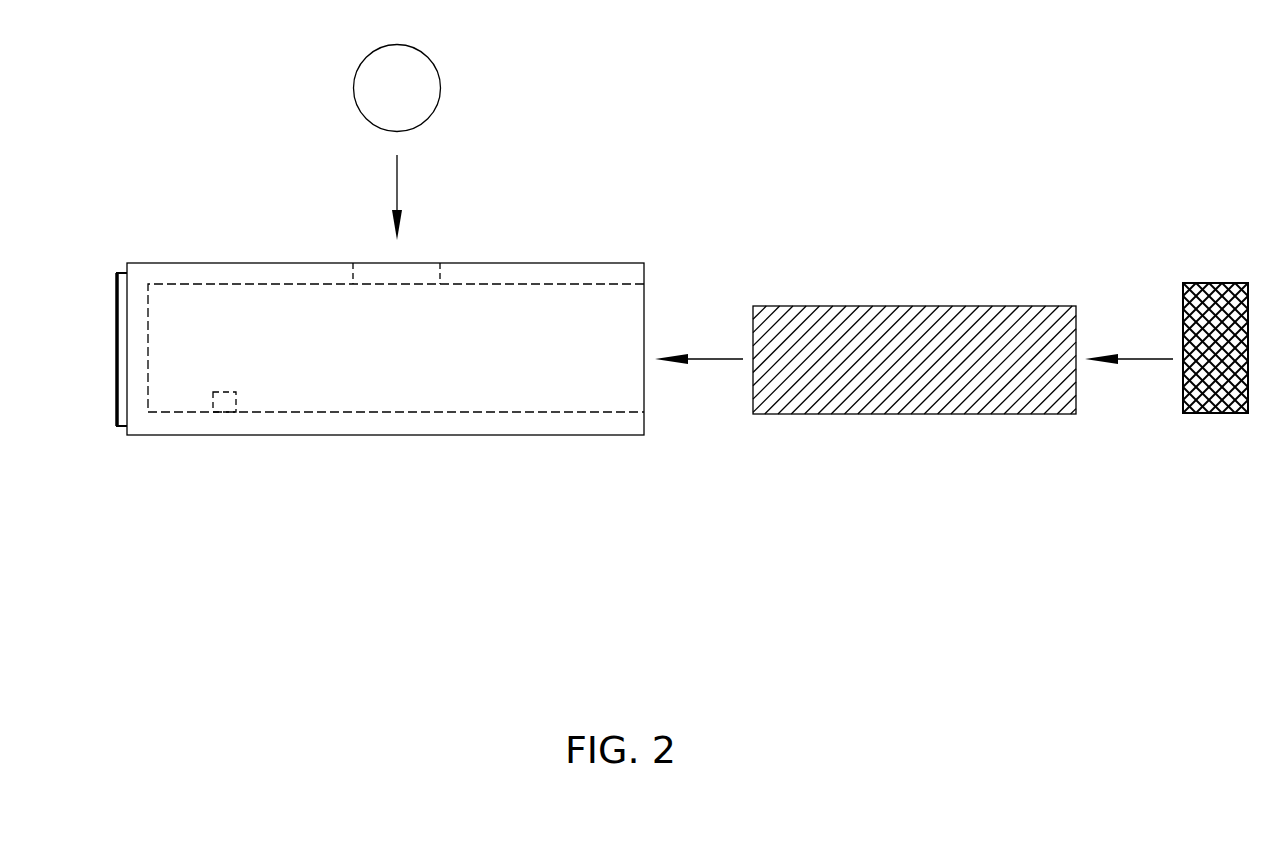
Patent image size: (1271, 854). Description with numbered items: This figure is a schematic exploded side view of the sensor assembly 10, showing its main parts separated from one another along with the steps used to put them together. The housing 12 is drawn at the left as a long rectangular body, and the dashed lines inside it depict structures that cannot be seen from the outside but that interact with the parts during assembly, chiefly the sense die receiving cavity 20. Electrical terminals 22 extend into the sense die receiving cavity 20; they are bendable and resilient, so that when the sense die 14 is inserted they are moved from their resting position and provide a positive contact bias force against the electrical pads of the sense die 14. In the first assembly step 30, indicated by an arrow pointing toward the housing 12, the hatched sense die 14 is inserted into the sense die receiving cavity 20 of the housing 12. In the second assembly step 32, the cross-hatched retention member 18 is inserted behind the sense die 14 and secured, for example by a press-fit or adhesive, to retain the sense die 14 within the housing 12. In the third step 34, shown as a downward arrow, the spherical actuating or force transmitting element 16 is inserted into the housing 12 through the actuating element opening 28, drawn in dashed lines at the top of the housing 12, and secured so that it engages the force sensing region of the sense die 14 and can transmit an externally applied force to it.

The sensor assembly 10 is at (894, 84).
The housing 12 is at (544, 263).
The sense die 14 is at (915, 306).
The actuating or force transmitting element 16 is at (430, 60).
The retention member 18 is at (222, 412).
The sense die receiving cavity 20 is at (235, 292).
The electrical terminals 22 is at (116, 348).
The actuating element opening 28 is at (434, 256).
The first assembly step 30 is at (698, 359).
The second assembly step 32 is at (1129, 359).
The third step 34 is at (398, 203).